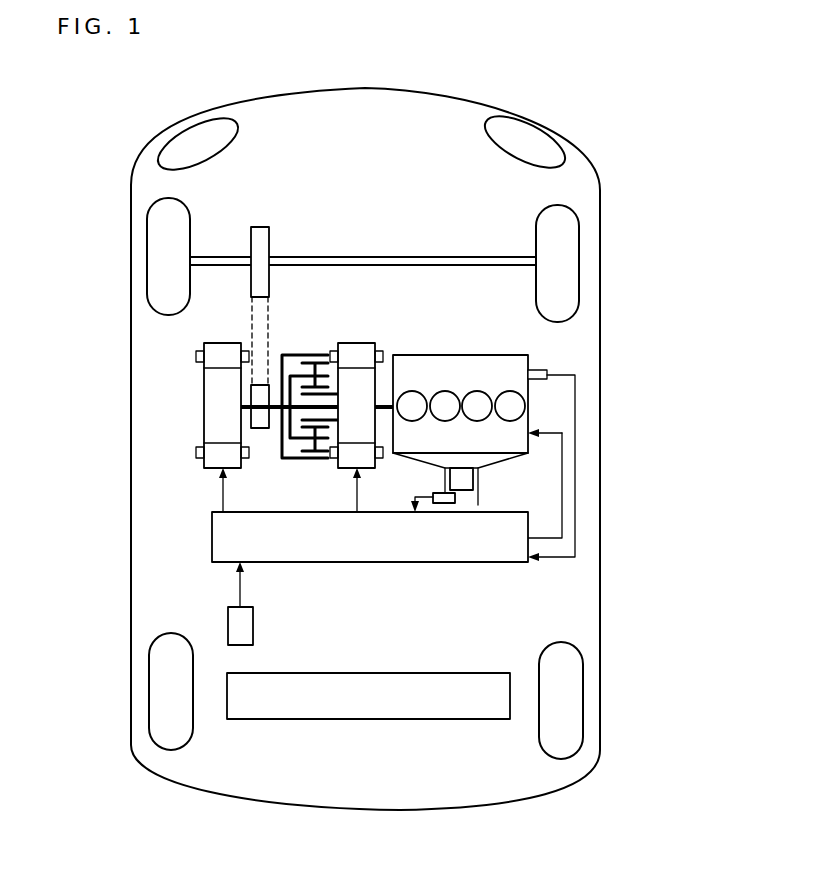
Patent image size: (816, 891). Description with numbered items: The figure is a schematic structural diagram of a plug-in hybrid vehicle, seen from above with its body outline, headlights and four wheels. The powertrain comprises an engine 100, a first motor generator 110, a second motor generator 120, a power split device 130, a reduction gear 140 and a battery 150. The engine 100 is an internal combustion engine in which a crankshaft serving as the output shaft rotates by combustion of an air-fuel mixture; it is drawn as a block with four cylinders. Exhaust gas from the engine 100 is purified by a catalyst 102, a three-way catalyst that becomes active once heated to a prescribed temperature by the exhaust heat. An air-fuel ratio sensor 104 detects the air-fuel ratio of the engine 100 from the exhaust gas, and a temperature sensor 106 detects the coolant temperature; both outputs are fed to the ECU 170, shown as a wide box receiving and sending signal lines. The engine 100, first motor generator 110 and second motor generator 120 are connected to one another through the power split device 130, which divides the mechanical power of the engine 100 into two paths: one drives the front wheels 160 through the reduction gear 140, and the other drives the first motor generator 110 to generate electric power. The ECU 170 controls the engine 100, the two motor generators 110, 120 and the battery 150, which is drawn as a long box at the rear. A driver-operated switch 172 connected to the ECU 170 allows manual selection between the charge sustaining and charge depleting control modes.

The engine 100 is at (430, 355).
The catalyst 102 is at (474, 481).
The air-fuel ratio sensor 104 is at (455, 499).
The temperature sensor 106 is at (548, 371).
The first motor generator 110 is at (360, 343).
The second motor generator 120 is at (204, 404).
The power split device 130 is at (305, 354).
The reduction gear 140 is at (260, 213).
The battery 150 is at (342, 719).
The front wheels 160 is at (142, 263).
The ECU 170 is at (212, 541).
The switch 172 is at (228, 626).